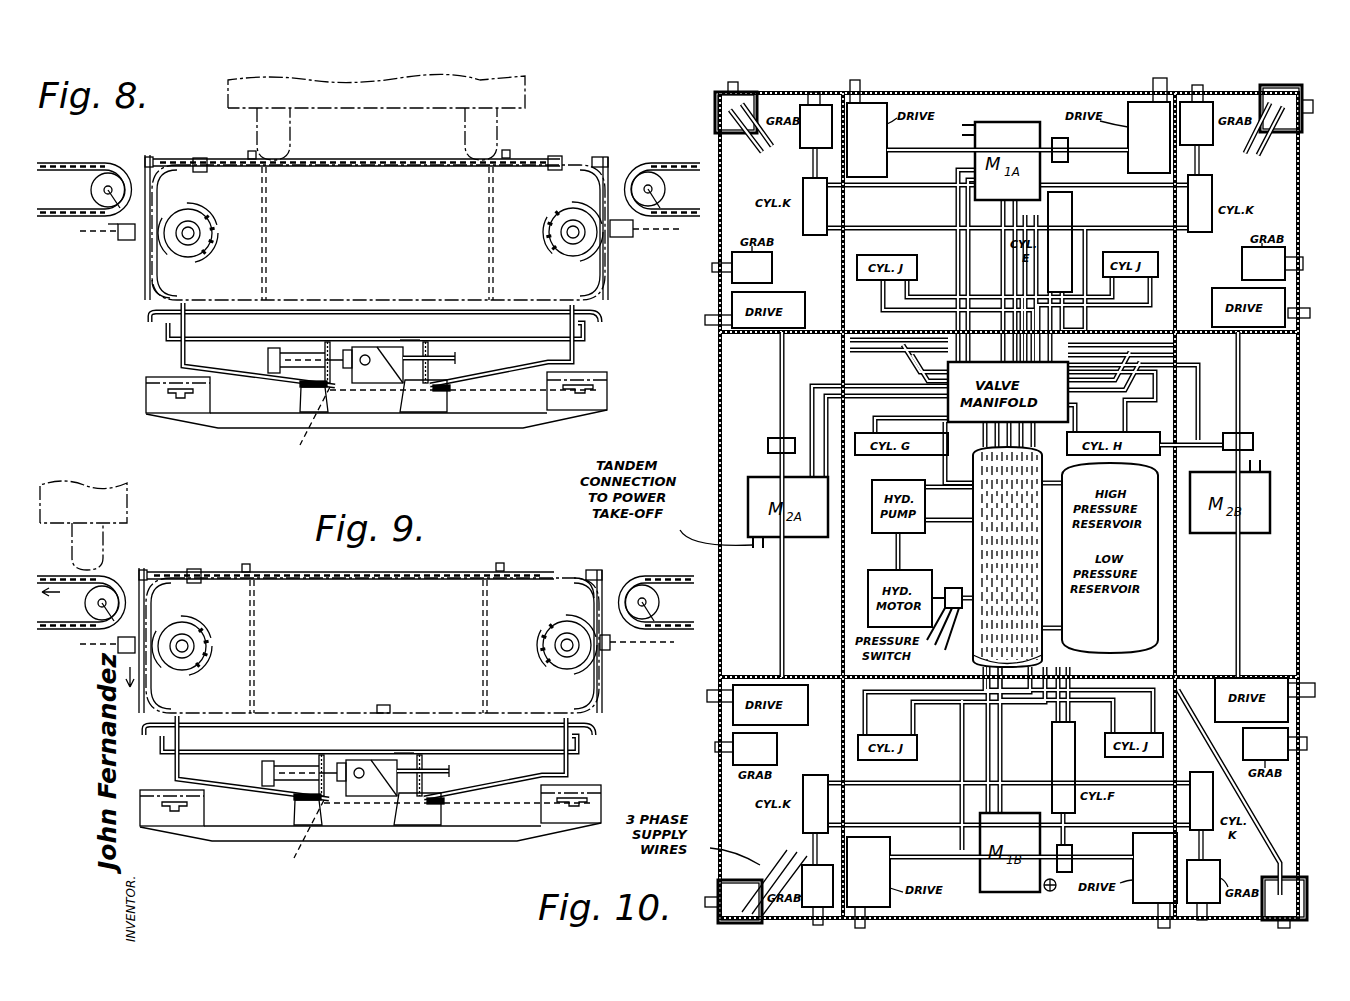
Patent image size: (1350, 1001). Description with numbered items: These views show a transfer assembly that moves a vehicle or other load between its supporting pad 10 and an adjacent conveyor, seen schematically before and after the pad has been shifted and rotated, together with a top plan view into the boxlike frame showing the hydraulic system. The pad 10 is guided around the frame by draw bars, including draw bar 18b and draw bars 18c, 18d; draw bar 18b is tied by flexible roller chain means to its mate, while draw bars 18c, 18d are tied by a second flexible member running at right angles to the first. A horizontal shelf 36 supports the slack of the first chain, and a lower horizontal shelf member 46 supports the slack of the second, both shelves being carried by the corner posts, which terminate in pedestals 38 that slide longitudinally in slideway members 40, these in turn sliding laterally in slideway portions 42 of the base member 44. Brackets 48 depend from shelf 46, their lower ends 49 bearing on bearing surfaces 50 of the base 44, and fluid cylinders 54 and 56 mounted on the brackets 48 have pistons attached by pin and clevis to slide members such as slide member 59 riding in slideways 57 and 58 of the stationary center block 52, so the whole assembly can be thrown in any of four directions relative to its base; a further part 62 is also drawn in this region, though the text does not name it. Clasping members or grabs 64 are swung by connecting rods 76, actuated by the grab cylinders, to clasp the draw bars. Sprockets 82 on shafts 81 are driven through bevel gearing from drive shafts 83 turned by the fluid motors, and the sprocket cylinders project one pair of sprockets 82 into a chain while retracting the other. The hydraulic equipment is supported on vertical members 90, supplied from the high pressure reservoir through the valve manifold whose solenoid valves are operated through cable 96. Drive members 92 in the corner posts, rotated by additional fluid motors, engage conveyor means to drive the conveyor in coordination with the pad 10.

In FIG. 8, the supporting pad 10 is at (541, 154).
In FIG. 9, the supporting pad 10 is at (372, 645).
In FIG. 8, the draw bar 18b is at (366, 158).
In FIG. 9, the draw bar 18b is at (350, 564).
In FIG. 8, the draw bar 18c is at (200, 158).
In FIG. 9, the draw bar 18c is at (400, 689).
In FIG. 8, the draw bar 18d is at (562, 157).
In FIG. 9, the draw bar 18d is at (197, 554).
In FIG. 8, the horizontal shelf 36 is at (410, 338).
In FIG. 9, the horizontal shelf 36 is at (430, 743).
In FIG. 8, the pedestal 38 is at (184, 374).
In FIG. 9, the pedestal 38 is at (371, 757).
In FIG. 8, the slideway defining member 40 is at (150, 393).
In FIG. 9, the slideway defining member 40 is at (389, 787).
In FIG. 8, the slideway portion of base member 42 is at (178, 398).
In FIG. 9, the slideway portion of base member 42 is at (371, 833).
In FIG. 8, the base member 44 is at (265, 428).
In FIG. 9, the base member 44 is at (370, 856).
In FIG. 8, the horizontal shelf member 46 is at (308, 316).
In FIG. 9, the horizontal shelf member 46 is at (369, 737).
In FIG. 8, the bracket 48 is at (330, 342).
In FIG. 9, the bracket 48 is at (369, 763).
In FIG. 8, the lower end of bracket 49 is at (445, 385).
In FIG. 9, the lower end of bracket 49 is at (351, 810).
In FIG. 8, the bearing surface 50 is at (440, 400).
In FIG. 9, the bearing surface 50 is at (459, 814).
In FIG. 8, the center block 52 is at (430, 398).
In FIG. 9, the center block 52 is at (367, 841).
In FIG. 8, the fluid cylinder 54 is at (283, 362).
In FIG. 9, the fluid cylinder 54 is at (299, 758).
In FIG. 8, the fluid cylinder 56 is at (376, 347).
In FIG. 9, the fluid cylinder 56 is at (378, 763).
In FIG. 8, the slideway 57 is at (383, 375).
In FIG. 9, the slideway 57 is at (379, 823).
In FIG. 8, the slideway 58 is at (308, 443).
In FIG. 9, the slideway 58 is at (305, 846).
In FIG. 8, the slide member 59 is at (372, 372).
In FIG. 9, the slide member 59 is at (345, 835).
In FIG. 8, the clutch block 62 is at (347, 370).
In FIG. 9, the clutch block 62 is at (338, 816).
In FIG. 8, the clasping member or grab 64 is at (250, 152).
In FIG. 9, the clasping member or grab 64 is at (380, 552).
In FIG. 10, the clasping member or grab 64 is at (814, 92).
In FIG. 10, the connecting rod 76 is at (812, 163).
In FIG. 8, the shaft 81 is at (190, 240).
In FIG. 9, the shaft 81 is at (374, 650).
In FIG. 8, the sprocket 82 is at (208, 222).
In FIG. 9, the sprocket 82 is at (374, 657).
In FIG. 10, the sprocket 82 is at (706, 320).
In FIG. 10, the drive shaft 83 is at (778, 380).
In FIG. 10, the vertical support member 90 is at (846, 364).
In FIG. 8, the drive member 92 is at (122, 242).
In FIG. 9, the drive member 92 is at (364, 665).
In FIG. 10, the drive member 92 is at (734, 88).
In FIG. 10, the cable 96 is at (1232, 815).